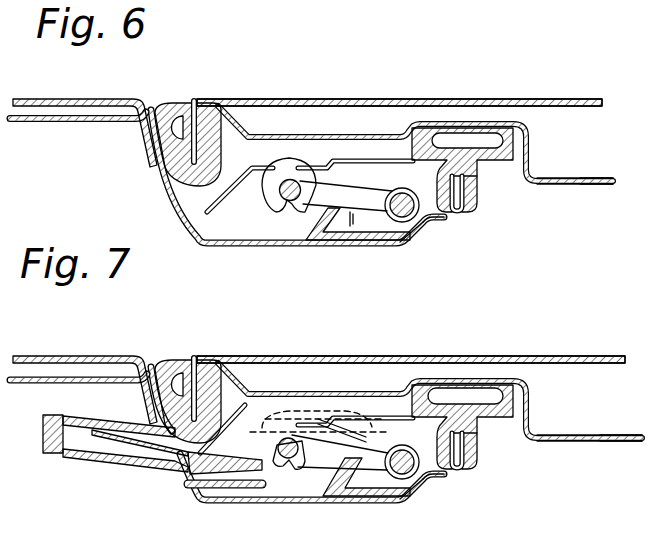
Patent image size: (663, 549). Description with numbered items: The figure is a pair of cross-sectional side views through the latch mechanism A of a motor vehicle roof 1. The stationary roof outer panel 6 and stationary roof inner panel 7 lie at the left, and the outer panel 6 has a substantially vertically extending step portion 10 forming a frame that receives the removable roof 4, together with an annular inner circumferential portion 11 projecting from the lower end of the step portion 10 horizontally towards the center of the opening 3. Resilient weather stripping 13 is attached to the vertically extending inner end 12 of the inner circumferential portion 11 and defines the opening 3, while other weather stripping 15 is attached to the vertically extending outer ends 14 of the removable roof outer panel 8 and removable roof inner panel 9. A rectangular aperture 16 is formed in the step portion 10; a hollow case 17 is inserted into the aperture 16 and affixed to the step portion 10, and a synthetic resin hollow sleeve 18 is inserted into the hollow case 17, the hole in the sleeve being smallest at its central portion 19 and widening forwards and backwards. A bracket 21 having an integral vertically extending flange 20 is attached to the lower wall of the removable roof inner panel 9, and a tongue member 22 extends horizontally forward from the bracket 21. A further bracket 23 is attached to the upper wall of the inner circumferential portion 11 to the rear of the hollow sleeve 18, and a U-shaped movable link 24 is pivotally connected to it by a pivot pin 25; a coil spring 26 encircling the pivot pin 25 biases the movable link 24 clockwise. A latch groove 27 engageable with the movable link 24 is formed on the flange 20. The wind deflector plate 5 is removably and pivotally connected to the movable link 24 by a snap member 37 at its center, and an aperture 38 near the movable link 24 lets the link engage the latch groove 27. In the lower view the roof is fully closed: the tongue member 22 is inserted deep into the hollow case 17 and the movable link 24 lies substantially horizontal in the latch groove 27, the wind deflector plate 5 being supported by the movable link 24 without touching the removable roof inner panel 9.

In FIG. 6, the sliding roof assembly 1 is at (55, 97).
In FIG. 7, the sliding roof assembly 1 is at (49, 340).
In FIG. 6, the opening 3 is at (557, 189).
In FIG. 7, the opening 3 is at (589, 470).
In FIG. 6, the removable roof 4 is at (493, 99).
In FIG. 7, the removable roof 4 is at (411, 336).
In FIG. 6, the wind deflector plate 5 is at (370, 155).
In FIG. 7, the wind deflector plate 5 is at (442, 396).
In FIG. 6, the stationary roof outer panel 6 is at (85, 98).
In FIG. 7, the stationary roof outer panel 6 is at (85, 372).
In FIG. 6, the stationary roof inner panel 7 is at (78, 123).
In FIG. 7, the stationary roof inner panel 7 is at (78, 393).
In FIG. 6, the removable roof outer panel 8 is at (564, 98).
In FIG. 7, the removable roof outer panel 8 is at (411, 339).
In FIG. 6, the removable roof inner panel 9 is at (599, 186).
In FIG. 7, the removable roof inner panel 9 is at (621, 456).
In FIG. 6, the step portion 10 is at (161, 98).
In FIG. 7, the step portion 10 is at (169, 369).
In FIG. 6, the inner circumferential portion 11 is at (248, 248).
In FIG. 7, the inner circumferential portion 11 is at (297, 452).
In FIG. 6, the inner end 12 is at (466, 210).
In FIG. 7, the inner end 12 is at (483, 457).
In FIG. 6, the weather stripping 13 is at (474, 181).
In FIG. 7, the weather stripping 13 is at (491, 430).
In FIG. 6, the outer ends 14 is at (235, 130).
In FIG. 7, the outer ends 14 is at (421, 386).
In FIG. 6, the weather stripping 15 is at (188, 100).
In FIG. 7, the weather stripping 15 is at (188, 381).
In FIG. 7, the aperture 16 is at (205, 482).
In FIG. 7, the hollow case 17 is at (41, 455).
In FIG. 7, the hollow sleeve 18 is at (138, 465).
In FIG. 7, the central portion 19 is at (125, 480).
In FIG. 7, the flange 20 is at (320, 376).
In FIG. 7, the bracket 21 is at (325, 381).
In FIG. 7, the tongue member 22 is at (112, 457).
In FIG. 6, the bracket 23 is at (372, 222).
In FIG. 7, the bracket 23 is at (355, 486).
In FIG. 6, the movable link 24 is at (335, 187).
In FIG. 7, the movable link 24 is at (305, 487).
In FIG. 6, the pivot pin 25 is at (432, 216).
In FIG. 7, the pivot pin 25 is at (450, 485).
In FIG. 6, the coil spring 26 is at (404, 236).
In FIG. 7, the coil spring 26 is at (427, 503).
In FIG. 7, the latch groove 27 is at (288, 489).
In FIG. 6, the snap member 37 is at (270, 182).
In FIG. 7, the aperture 38 is at (225, 510).
In FIG. 6, the latch mechanism A is at (422, 232).
In FIG. 7, the latch mechanism A is at (409, 524).